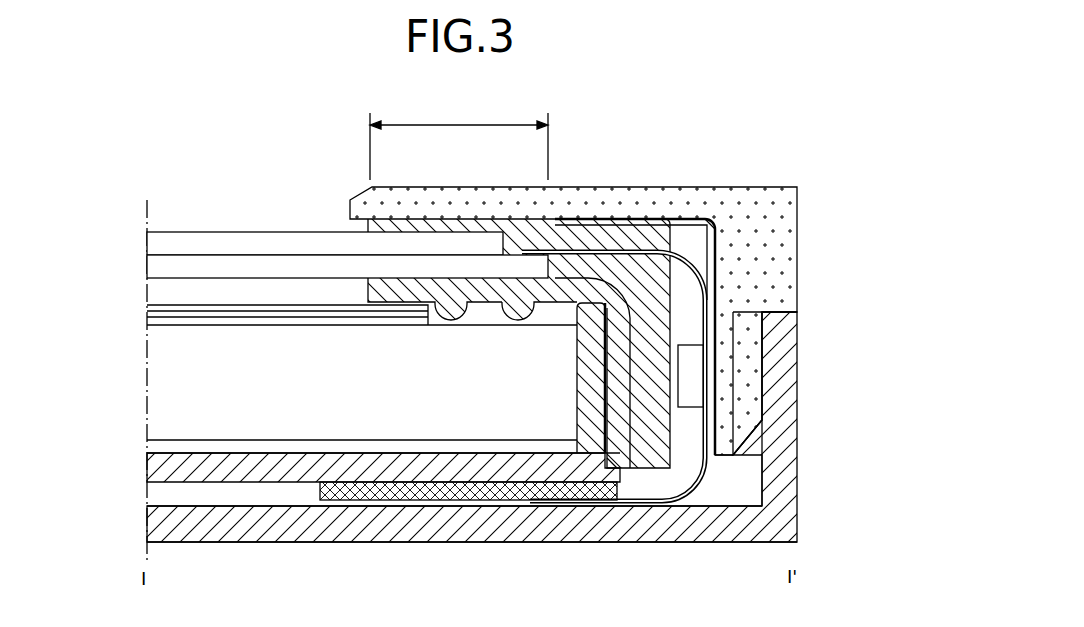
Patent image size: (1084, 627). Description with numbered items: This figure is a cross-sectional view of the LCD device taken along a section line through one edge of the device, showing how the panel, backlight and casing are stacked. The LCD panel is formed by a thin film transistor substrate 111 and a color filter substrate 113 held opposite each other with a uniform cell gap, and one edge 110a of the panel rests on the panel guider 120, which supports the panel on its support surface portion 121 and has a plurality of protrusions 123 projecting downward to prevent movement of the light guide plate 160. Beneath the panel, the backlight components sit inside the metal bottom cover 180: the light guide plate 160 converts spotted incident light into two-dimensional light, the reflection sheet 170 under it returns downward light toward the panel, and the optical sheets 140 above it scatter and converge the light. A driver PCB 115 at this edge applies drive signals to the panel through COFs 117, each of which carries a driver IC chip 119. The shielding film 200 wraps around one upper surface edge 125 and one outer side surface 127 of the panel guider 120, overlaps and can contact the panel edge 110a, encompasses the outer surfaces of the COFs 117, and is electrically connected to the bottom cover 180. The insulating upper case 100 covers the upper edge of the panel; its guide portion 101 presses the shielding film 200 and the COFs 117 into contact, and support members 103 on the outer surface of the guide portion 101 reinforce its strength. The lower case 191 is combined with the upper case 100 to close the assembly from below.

The upper case 100 is at (723, 192).
The guide portion 101 is at (723, 437).
The support members 103 is at (755, 382).
The edge of the LCD panel 110a is at (459, 141).
The thin film transistor substrate 111 is at (147, 267).
The color filter substrate 113 is at (147, 242).
The driver PCB 115 is at (396, 507).
The COFs 117 is at (597, 502).
The driver IC chip 119 is at (690, 397).
The panel guider 120 is at (582, 232).
The support surface portion 121 is at (419, 287).
The protrusions 123 is at (520, 305).
The upper surface edge 125 is at (622, 223).
The outer side surface 127 is at (672, 321).
The optical sheets 140 is at (147, 305).
The light guide plate 160 is at (147, 371).
The reflection sheet 170 is at (147, 446).
The bottom cover 180 is at (150, 466).
The lower case 191 is at (788, 480).
The shielding film 200 is at (657, 218).